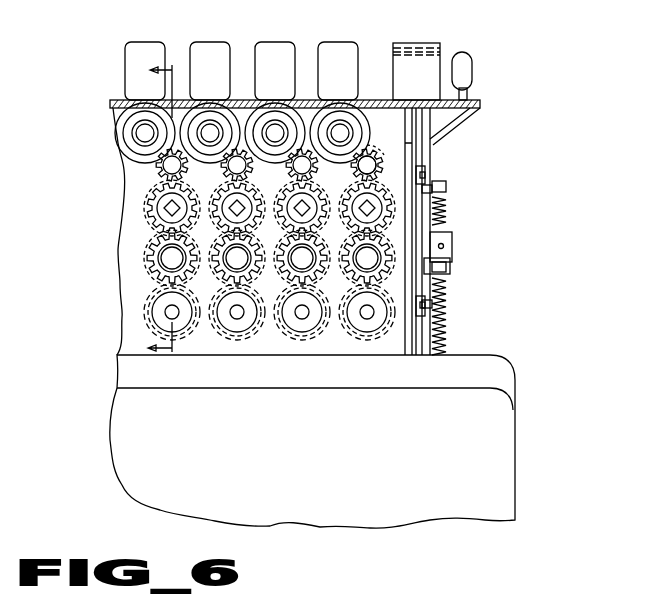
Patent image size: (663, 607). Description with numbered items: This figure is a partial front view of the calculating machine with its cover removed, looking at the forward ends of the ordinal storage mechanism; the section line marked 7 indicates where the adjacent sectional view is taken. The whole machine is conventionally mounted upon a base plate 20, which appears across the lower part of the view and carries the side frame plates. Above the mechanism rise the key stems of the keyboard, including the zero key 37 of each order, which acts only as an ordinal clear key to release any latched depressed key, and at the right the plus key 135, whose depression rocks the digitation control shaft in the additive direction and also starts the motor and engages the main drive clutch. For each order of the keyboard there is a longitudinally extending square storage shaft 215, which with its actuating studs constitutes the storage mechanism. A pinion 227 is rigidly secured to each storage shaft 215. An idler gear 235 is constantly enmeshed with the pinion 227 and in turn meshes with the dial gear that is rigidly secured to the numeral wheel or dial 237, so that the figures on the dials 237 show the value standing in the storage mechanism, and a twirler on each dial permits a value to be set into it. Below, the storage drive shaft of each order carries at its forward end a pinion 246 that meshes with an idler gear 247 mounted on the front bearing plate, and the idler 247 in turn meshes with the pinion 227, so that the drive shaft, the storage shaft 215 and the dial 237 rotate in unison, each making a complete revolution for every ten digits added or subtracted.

The base plate 20 is at (456, 368).
The zero key 37 is at (271, 50).
The plus key 135 is at (408, 62).
The numeral wheel or dial 237 is at (127, 128).
The pinion 227 is at (158, 181).
The idler gear 235 is at (379, 160).
The storage shaft 215 is at (166, 208).
The idler gear 247 is at (162, 262).
The pinion 246 is at (158, 296).
The section line 7- 7 is at (165, 212).